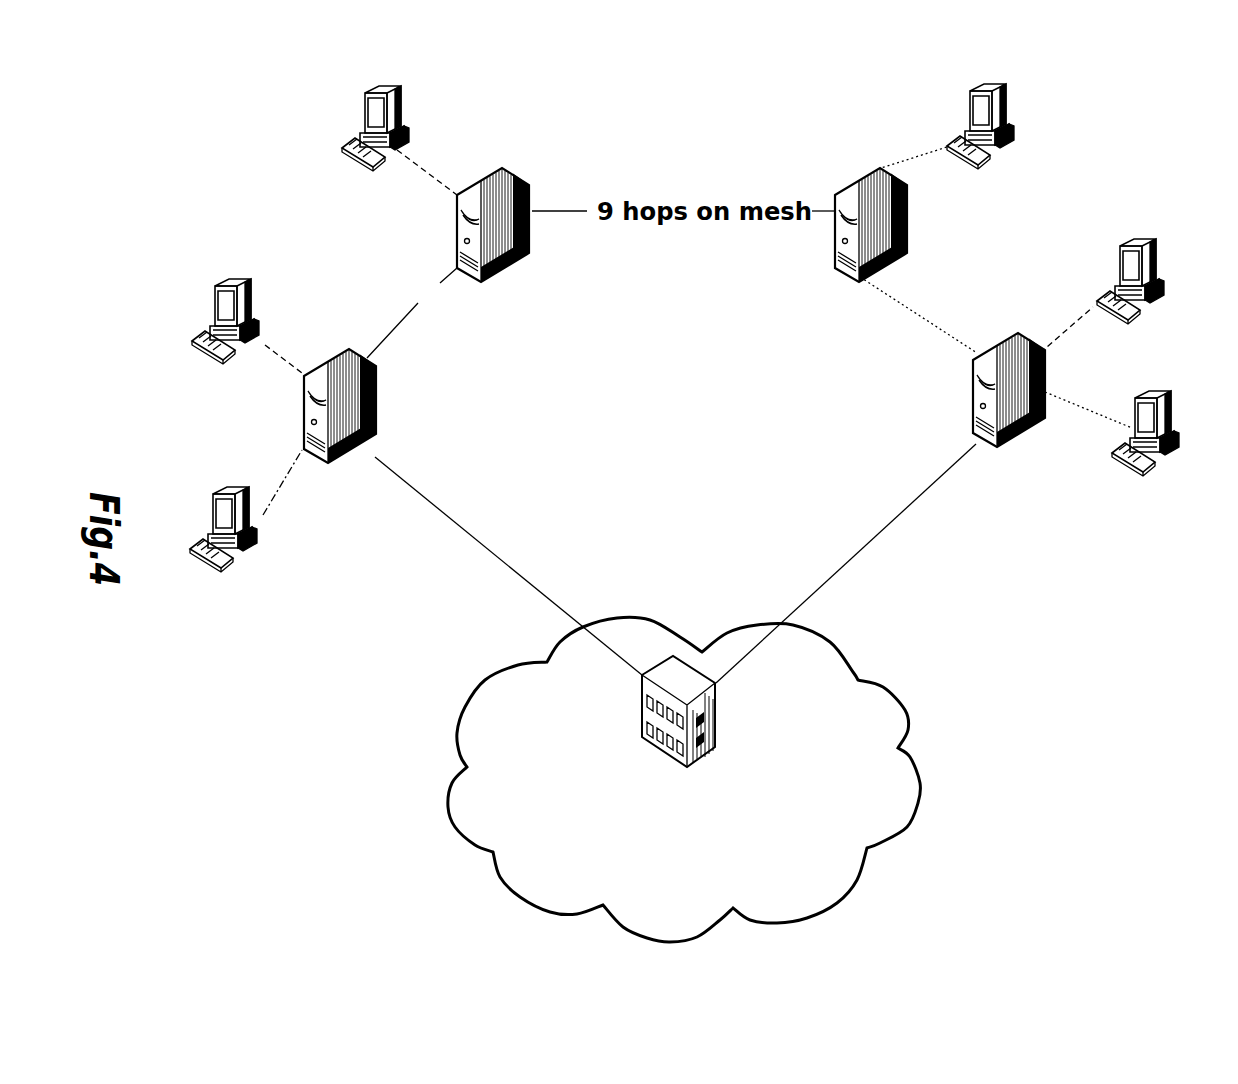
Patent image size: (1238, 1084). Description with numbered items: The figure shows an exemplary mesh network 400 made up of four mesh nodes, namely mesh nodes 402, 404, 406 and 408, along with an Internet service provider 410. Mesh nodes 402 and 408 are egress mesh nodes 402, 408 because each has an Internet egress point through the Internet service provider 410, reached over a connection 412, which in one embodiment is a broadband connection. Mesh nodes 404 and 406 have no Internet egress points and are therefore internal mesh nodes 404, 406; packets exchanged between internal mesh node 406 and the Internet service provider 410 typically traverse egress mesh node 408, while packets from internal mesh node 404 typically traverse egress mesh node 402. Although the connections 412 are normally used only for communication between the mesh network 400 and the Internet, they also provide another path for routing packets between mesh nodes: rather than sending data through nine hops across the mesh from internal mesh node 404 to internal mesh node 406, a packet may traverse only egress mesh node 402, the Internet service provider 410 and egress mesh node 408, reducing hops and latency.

The mesh network 400 is at (1030, 718).
The egress mesh node 402 is at (395, 420).
The internal mesh node 404 is at (497, 300).
The internal mesh node 406 is at (842, 298).
The egress mesh node 408 is at (952, 402).
The Internet service provider 410 is at (582, 718).
The connection 412 is at (535, 582).